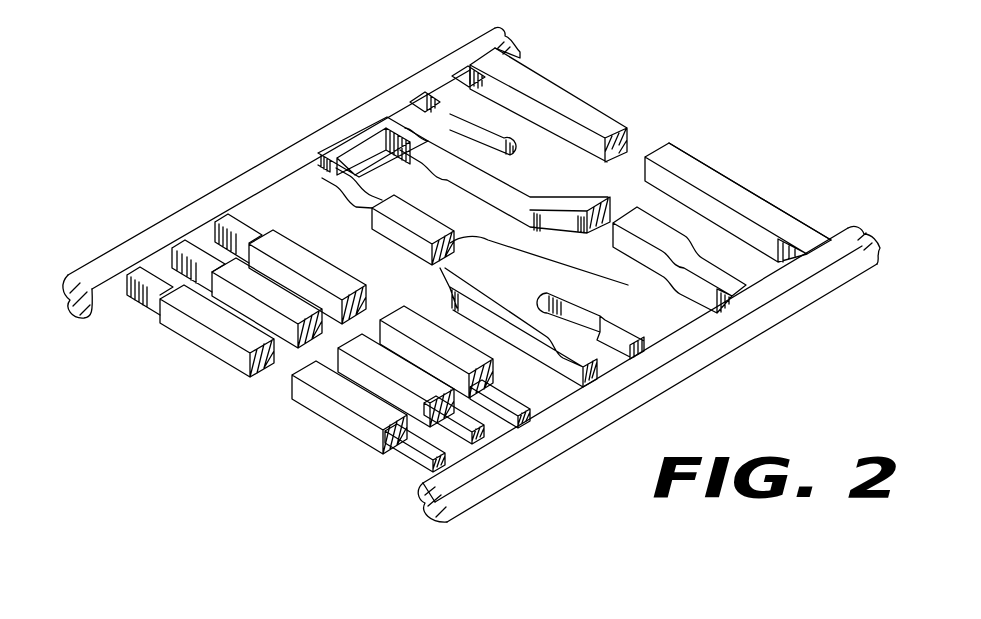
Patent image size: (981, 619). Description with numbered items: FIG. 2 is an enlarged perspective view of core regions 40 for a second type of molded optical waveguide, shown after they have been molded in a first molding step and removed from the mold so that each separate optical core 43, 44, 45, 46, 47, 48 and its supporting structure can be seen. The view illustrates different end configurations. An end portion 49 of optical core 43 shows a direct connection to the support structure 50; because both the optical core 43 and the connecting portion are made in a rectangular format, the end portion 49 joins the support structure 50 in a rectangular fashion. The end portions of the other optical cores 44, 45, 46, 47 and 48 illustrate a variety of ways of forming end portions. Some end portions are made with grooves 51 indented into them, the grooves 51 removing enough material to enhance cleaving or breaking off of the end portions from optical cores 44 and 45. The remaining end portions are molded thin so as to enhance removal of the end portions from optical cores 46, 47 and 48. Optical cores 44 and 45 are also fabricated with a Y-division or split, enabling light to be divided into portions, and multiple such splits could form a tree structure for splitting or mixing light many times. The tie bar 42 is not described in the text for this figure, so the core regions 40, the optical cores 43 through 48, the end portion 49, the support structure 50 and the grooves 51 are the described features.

The core regions 40 is at (471, 284).
The tie bar 42 is at (238, 238).
The optical core 43 is at (713, 171).
The optical core 44 is at (636, 266).
The optical core 45 is at (501, 252).
The optical core 46 is at (426, 324).
The optical core 47 is at (347, 342).
The optical core 48 is at (333, 422).
The end portion 49 is at (770, 206).
The support structure 50 is at (453, 522).
The grooves 51 is at (607, 310).